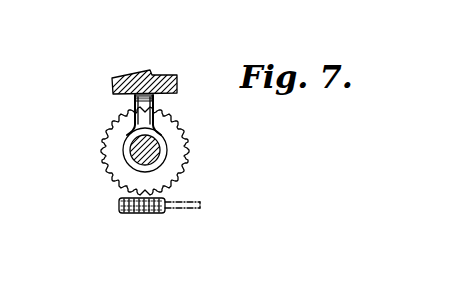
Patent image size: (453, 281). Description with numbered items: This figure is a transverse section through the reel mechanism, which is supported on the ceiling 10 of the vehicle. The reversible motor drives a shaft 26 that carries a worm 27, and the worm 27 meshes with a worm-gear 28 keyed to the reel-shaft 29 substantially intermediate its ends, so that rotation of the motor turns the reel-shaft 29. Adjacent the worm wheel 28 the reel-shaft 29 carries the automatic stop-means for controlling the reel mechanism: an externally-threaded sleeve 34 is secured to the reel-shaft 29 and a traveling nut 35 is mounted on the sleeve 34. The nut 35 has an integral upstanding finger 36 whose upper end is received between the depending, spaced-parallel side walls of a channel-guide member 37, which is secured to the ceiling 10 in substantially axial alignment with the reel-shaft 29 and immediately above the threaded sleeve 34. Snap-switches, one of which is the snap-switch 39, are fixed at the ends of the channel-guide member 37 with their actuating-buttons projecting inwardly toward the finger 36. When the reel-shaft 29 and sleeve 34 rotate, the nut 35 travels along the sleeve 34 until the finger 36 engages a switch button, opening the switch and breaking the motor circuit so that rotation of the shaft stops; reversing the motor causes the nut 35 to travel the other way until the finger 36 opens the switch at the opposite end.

The ceiling 10 is at (142, 78).
The shaft of the motor 26 is at (186, 209).
The worm 27 is at (137, 214).
The worm-gear 28 is at (188, 168).
The reel-shaft 29 is at (124, 154).
The externally-threaded sleeve 34 is at (128, 162).
The traveling nut 35 is at (168, 152).
The upstanding finger 36 is at (155, 100).
The channel-guide member 37 is at (137, 96).
The snap-switch 39 is at (134, 132).